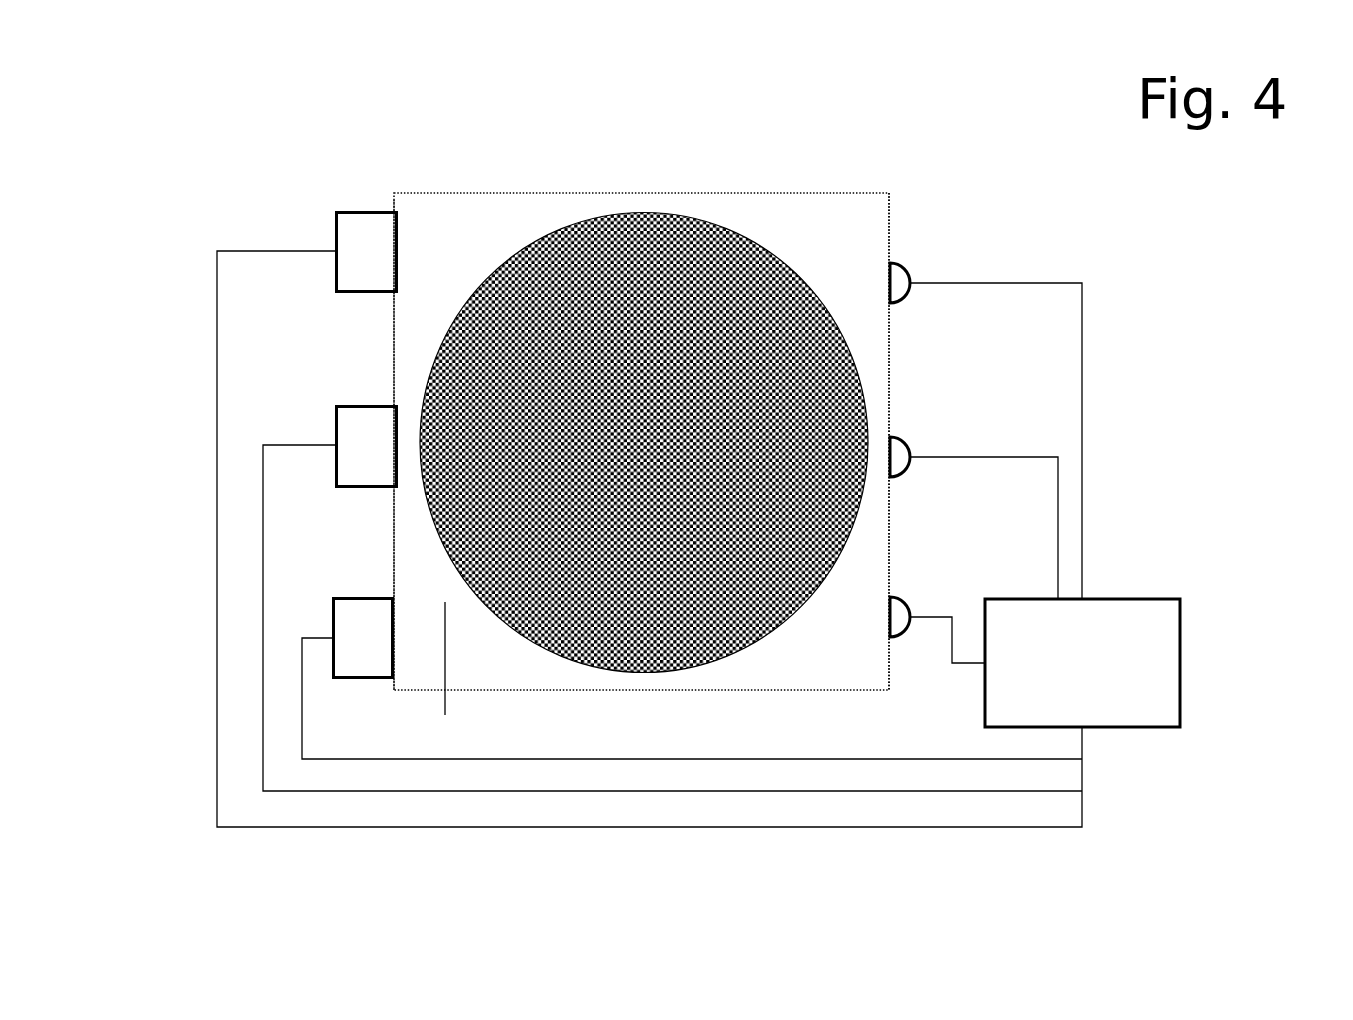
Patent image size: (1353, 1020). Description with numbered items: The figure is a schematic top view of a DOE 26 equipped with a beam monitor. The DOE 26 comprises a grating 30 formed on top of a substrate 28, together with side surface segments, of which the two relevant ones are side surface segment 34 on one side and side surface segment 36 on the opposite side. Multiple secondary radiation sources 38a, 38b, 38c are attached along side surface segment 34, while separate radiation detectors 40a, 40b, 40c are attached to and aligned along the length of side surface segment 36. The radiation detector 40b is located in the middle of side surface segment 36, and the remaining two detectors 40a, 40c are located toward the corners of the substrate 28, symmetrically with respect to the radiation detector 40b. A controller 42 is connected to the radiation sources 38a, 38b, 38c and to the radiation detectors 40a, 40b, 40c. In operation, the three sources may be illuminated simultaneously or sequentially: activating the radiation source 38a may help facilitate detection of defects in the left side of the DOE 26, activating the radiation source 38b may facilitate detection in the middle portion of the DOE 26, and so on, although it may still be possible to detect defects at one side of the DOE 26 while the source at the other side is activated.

The DOE 26 is at (438, 171).
The substrate 28 is at (451, 678).
The grating 30 is at (517, 343).
The side surface segment 34 is at (394, 388).
The side surface segment 36 is at (895, 222).
The radiation source 38a is at (372, 260).
The radiation source 38b is at (368, 427).
The radiation source 38c is at (375, 648).
The radiation detector 40a is at (902, 280).
The radiation detector 40b is at (912, 450).
The radiation detector 40c is at (903, 612).
The controller 42 is at (1123, 629).